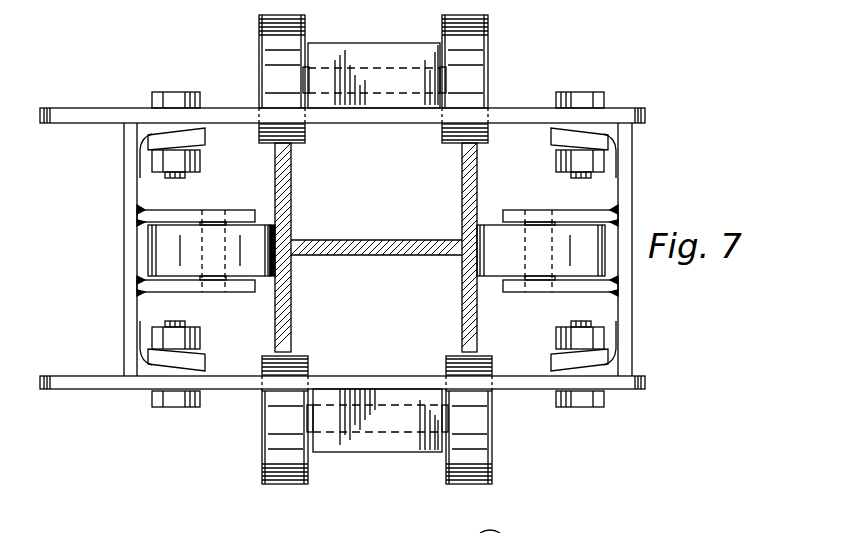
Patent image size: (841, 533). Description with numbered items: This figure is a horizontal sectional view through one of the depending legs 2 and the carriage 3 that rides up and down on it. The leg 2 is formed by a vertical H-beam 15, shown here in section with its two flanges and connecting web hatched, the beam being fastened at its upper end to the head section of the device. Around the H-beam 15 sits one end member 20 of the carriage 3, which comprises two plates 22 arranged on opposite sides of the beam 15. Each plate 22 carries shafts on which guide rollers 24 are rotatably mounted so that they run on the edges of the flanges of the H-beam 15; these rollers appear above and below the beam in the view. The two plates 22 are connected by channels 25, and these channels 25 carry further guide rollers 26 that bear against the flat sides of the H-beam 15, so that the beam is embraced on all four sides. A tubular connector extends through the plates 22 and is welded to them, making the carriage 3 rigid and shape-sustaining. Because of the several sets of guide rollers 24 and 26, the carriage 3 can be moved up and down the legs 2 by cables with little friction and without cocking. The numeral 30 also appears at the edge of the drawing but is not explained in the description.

The depending legs 2 is at (291, 300).
The carriage 3 is at (612, 108).
The vertical H-beam 15 is at (415, 250).
The end member 20 is at (510, 108).
The plates 22 is at (234, 118).
The guide rollers 24 is at (270, 50).
The channels 25 is at (132, 250).
The guide rollers 26 is at (270, 278).
The adjacent component 30 is at (528, 532).